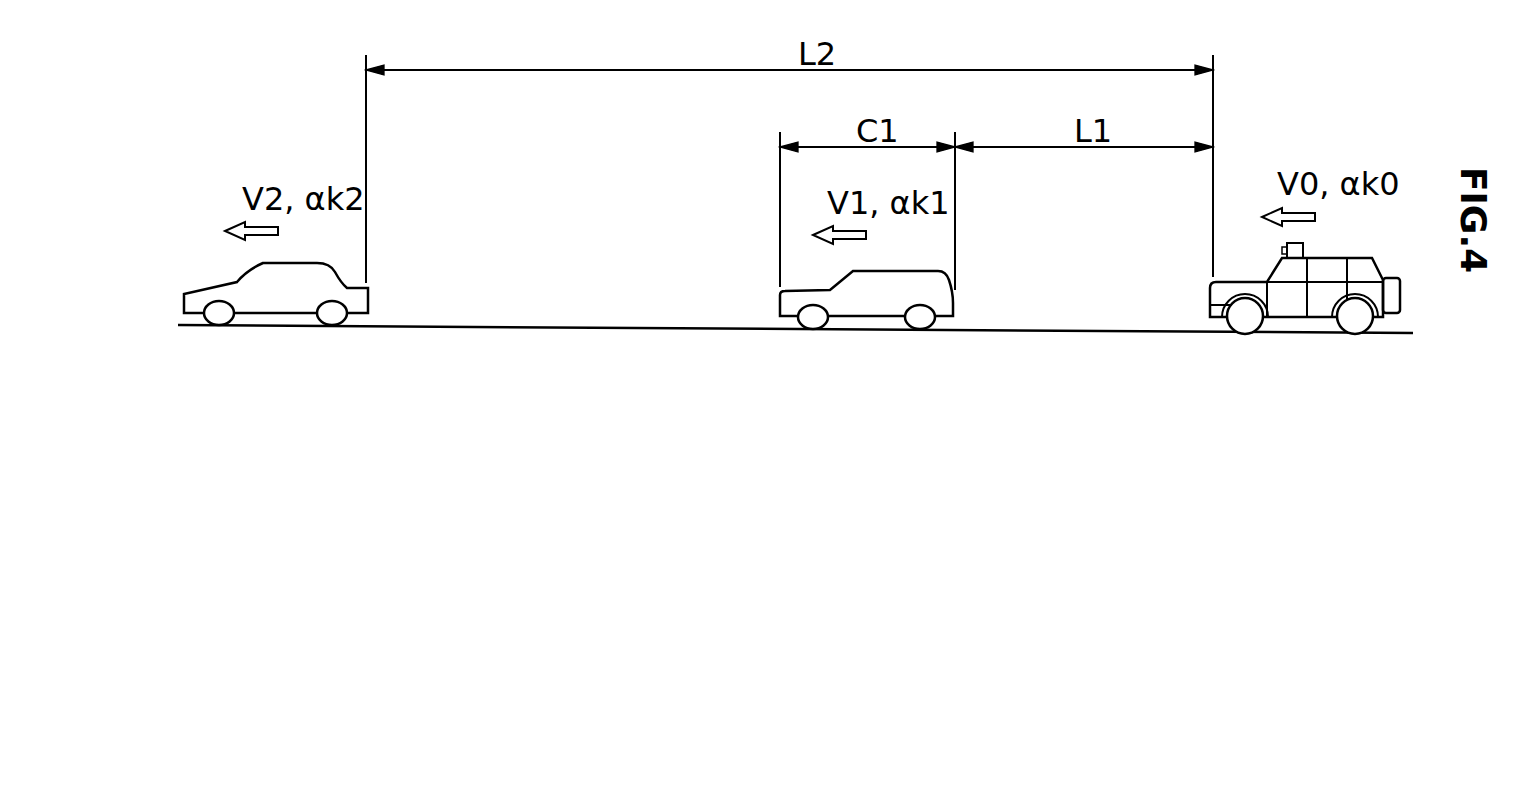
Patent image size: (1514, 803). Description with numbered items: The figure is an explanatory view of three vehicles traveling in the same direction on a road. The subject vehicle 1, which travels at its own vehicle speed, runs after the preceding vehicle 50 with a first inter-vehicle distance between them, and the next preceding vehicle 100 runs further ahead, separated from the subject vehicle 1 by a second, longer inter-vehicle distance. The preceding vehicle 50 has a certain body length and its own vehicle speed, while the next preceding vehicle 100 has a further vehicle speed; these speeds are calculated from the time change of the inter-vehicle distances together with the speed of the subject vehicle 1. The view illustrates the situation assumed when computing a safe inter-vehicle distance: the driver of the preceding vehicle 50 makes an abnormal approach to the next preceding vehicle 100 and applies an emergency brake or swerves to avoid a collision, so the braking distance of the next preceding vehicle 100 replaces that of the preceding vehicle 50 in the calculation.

The subject vehicle 1 is at (1383, 262).
The preceding vehicle 50 is at (953, 279).
The next preceding vehicle 100 is at (368, 293).